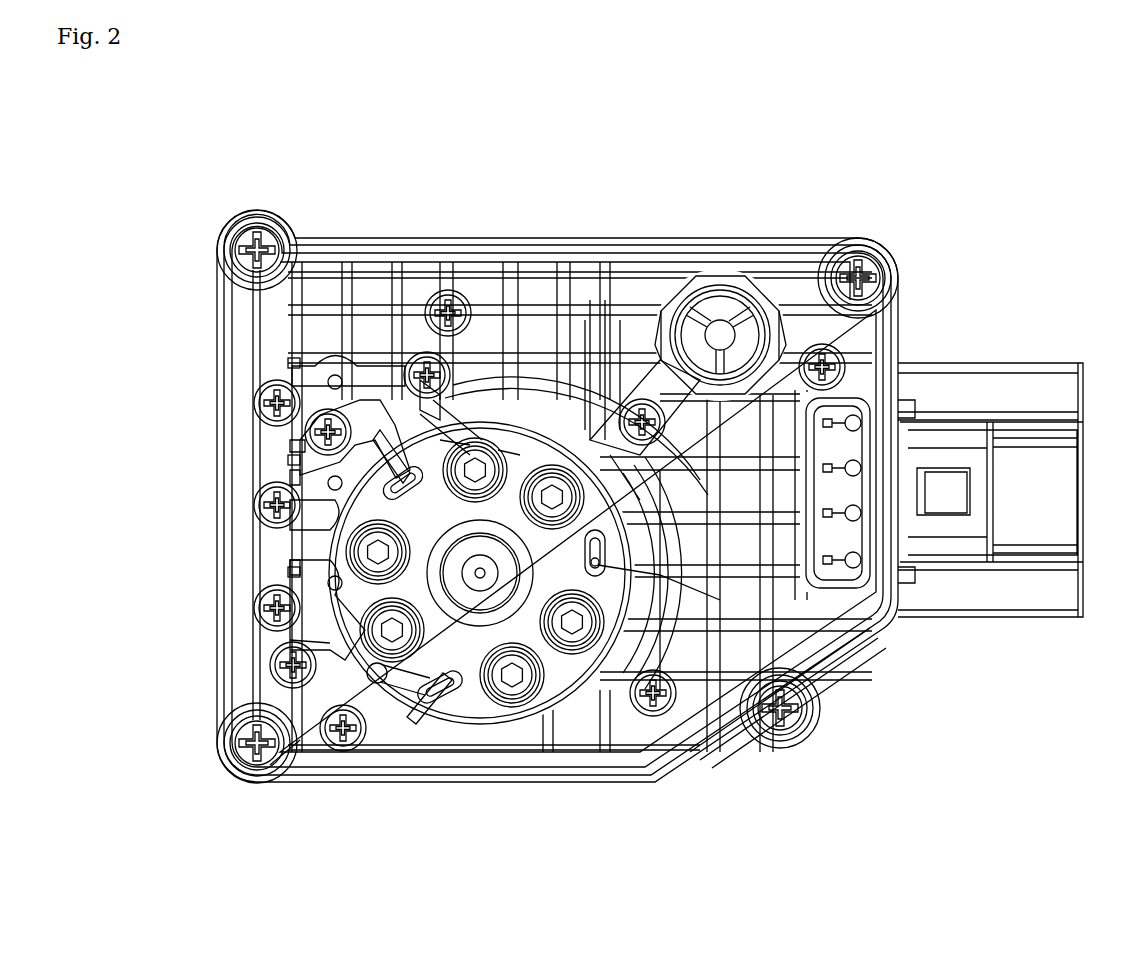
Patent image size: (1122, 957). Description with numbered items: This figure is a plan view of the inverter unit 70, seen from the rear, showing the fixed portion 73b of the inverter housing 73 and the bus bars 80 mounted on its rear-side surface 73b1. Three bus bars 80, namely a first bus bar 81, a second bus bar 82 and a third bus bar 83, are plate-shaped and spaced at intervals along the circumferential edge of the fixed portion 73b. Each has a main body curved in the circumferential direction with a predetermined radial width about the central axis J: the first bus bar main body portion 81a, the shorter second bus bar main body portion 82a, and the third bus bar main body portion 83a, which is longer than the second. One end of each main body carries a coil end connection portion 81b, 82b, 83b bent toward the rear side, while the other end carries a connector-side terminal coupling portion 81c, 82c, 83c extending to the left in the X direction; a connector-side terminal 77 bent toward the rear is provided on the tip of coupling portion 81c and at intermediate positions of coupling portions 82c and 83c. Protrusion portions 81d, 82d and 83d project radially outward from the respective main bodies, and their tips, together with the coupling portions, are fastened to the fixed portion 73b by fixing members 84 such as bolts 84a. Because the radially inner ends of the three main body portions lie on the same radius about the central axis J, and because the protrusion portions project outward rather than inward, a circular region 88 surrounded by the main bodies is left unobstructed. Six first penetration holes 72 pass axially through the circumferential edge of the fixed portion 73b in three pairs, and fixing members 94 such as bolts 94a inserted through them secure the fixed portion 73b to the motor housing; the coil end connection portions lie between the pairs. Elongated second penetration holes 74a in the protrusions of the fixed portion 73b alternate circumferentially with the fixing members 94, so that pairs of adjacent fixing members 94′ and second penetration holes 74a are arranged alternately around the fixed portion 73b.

The inverter unit 70 is at (850, 214).
The first penetration hole 72 is at (481, 518).
The inverter housing 73 is at (908, 310).
The fixed portion 73b is at (480, 592).
The surface 73b1 is at (476, 440).
The second penetration hole 74a is at (600, 560).
The connector-side terminal 77 is at (288, 362).
The bus bar 80 is at (550, 470).
The first bus bar 81 is at (590, 440).
The first bus bar main body portion 81a is at (602, 375).
The coil end connection portion 81b is at (835, 665).
The connector-side terminal coupling portion 81c is at (330, 345).
The protrusion portion 81d is at (438, 400).
The second bus bar 82 is at (355, 445).
The second bus bar main body portion 82a is at (290, 475).
The coil end connection portion 82b is at (395, 445).
The connector-side terminal coupling portion 82c is at (327, 530).
The protrusion portion 82d is at (300, 450).
The third bus bar 83 is at (327, 610).
The third bus bar main body portion 83a is at (330, 645).
The coil end connection portion 83b is at (447, 702).
The connector-side terminal coupling portion 83c is at (268, 600).
The protrusion portion 83d is at (292, 780).
The fixing member 84 is at (427, 352).
The bolt 84a is at (557, 496).
The circular region 88 is at (605, 642).
The fixing member 94 is at (395, 662).
The bolt 94a is at (475, 572).
The fixing member 94′ is at (425, 702).
The central axis J is at (500, 622).